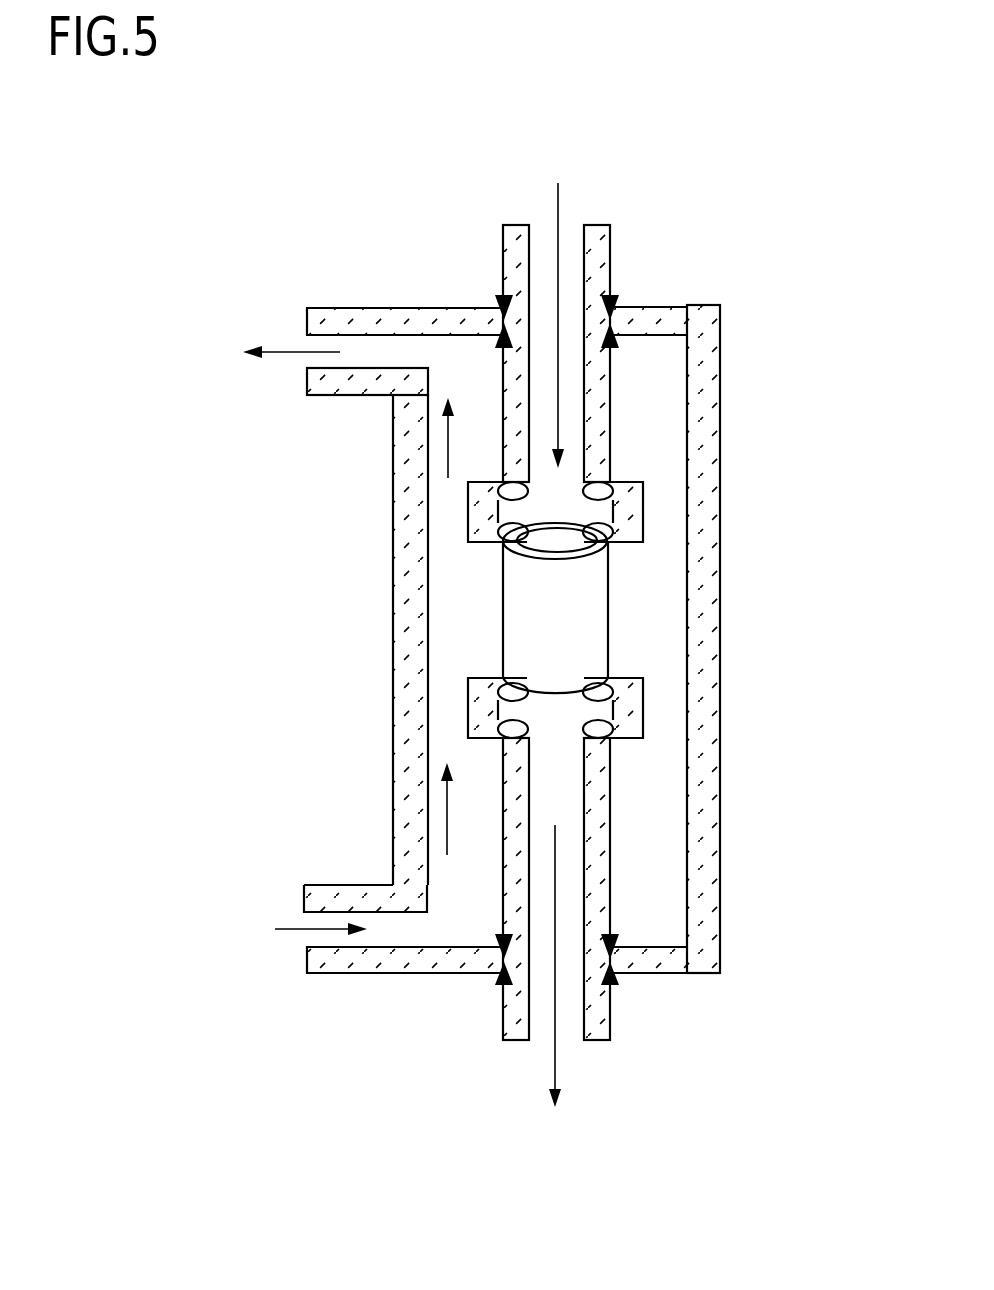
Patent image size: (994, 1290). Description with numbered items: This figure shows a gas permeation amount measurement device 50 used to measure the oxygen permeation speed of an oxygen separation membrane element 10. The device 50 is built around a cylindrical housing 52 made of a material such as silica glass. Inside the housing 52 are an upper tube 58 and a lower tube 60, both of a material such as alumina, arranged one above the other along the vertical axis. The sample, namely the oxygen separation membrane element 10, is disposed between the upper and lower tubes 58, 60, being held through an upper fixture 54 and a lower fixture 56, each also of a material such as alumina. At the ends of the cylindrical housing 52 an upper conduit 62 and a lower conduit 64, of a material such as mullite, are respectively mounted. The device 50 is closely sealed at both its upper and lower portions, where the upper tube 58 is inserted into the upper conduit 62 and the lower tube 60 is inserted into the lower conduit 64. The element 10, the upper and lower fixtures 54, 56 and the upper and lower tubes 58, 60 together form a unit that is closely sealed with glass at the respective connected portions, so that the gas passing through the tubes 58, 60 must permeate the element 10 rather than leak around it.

The oxygen separation membrane element 10 is at (520, 605).
The gas permeation amount measurement device 50 is at (788, 313).
The cylindrical housing 52 is at (705, 635).
The upper fixture 54 is at (478, 515).
The lower fixture 56 is at (478, 707).
The upper tube 58 is at (598, 248).
The lower tube 60 is at (593, 1022).
The upper conduit 62 is at (365, 322).
The lower conduit 64 is at (373, 962).